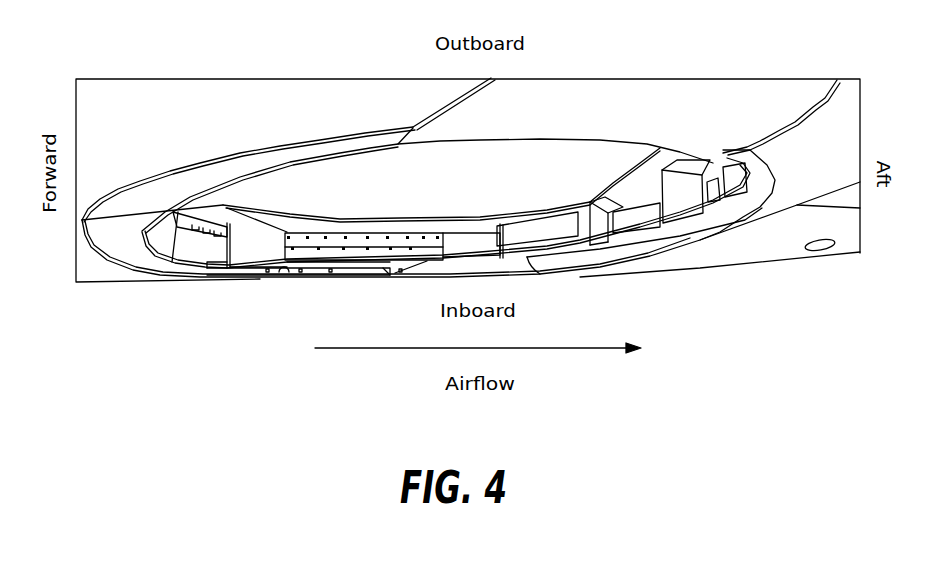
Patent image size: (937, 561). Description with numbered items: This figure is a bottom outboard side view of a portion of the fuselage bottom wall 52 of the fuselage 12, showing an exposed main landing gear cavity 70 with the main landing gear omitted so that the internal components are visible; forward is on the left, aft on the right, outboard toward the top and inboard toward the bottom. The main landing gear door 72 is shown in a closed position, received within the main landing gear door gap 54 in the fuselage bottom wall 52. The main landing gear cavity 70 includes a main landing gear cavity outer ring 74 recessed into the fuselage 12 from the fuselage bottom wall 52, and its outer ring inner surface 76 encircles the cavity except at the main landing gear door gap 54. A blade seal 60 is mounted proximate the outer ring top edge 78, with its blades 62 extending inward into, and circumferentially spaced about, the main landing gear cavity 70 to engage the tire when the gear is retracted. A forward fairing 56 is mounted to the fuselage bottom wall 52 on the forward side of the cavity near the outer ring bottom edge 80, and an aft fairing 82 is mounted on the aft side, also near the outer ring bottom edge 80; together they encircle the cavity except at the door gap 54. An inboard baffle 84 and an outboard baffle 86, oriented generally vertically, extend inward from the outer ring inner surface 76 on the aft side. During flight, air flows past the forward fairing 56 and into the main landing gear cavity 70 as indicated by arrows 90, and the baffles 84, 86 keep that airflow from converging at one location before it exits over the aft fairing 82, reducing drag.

The fuselage 12 is at (112, 98).
The fuselage bottom wall 52 is at (112, 98).
The main landing gear door gap 54 is at (820, 105).
The forward fairing 56 is at (103, 238).
The blade seal 60 is at (745, 148).
The blades 62 is at (218, 207).
The main landing gear cavity 70 is at (224, 143).
The main landing gear door 72 is at (630, 90).
The main landing gear cavity outer ring 74 is at (200, 255).
The outer ring inner surface 76 is at (200, 255).
The outer ring top edge 78 is at (177, 212).
The outer ring bottom edge 80 is at (287, 262).
The aft fairing 82 is at (547, 267).
The inboard baffle 84 is at (602, 236).
The outboard baffle 86 is at (682, 198).
The arrows 90 is at (568, 352).